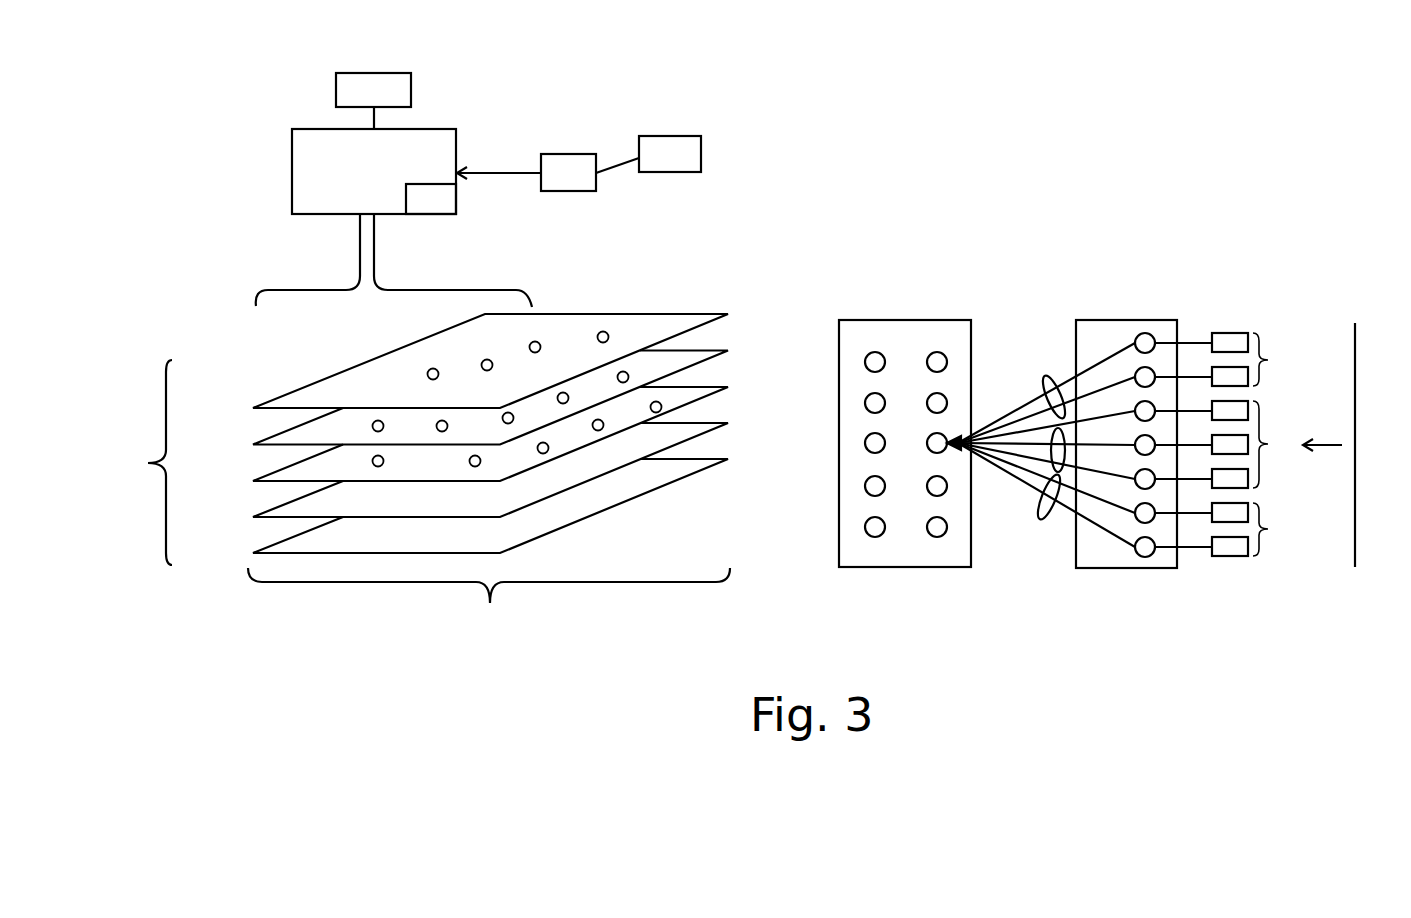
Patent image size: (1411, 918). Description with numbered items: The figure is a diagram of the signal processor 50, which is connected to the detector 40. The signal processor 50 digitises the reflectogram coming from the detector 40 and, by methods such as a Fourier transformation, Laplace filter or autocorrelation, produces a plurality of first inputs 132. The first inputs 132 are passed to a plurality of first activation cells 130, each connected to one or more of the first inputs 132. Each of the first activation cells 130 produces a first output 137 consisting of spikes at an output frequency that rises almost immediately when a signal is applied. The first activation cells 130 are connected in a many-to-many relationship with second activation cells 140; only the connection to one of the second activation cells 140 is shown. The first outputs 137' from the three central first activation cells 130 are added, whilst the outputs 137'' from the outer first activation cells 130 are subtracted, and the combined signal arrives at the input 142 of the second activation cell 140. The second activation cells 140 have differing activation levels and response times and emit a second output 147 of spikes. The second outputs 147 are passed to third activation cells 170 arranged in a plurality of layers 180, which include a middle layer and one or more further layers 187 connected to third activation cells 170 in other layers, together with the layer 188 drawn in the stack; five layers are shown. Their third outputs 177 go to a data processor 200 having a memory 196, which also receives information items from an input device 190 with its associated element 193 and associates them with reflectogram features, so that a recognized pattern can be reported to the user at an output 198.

The output 198 is at (373, 101).
The data processor 200 is at (374, 171).
The memory 196 is at (431, 199).
The input device 190 is at (526, 172).
The input device 193 is at (648, 154).
The signal processor 50 is at (566, 131).
The third outputs 177 is at (375, 253).
The layers 180 is at (411, 439).
The third activation cells 170 is at (489, 604).
The pixelated layer 188 is at (263, 477).
The further layers 187 is at (263, 512).
The second activation cells 140 is at (905, 567).
The second output 147 is at (931, 440).
The input 142 is at (978, 463).
The first output 137 is at (1046, 445).
The first outputs from central first activation cells 137' is at (1029, 451).
The outputs from outer first activation cells 137'' is at (1040, 447).
The first activation cells 130 is at (1127, 568).
The first inputs 132 is at (1190, 334).
The detector 40 is at (1334, 461).